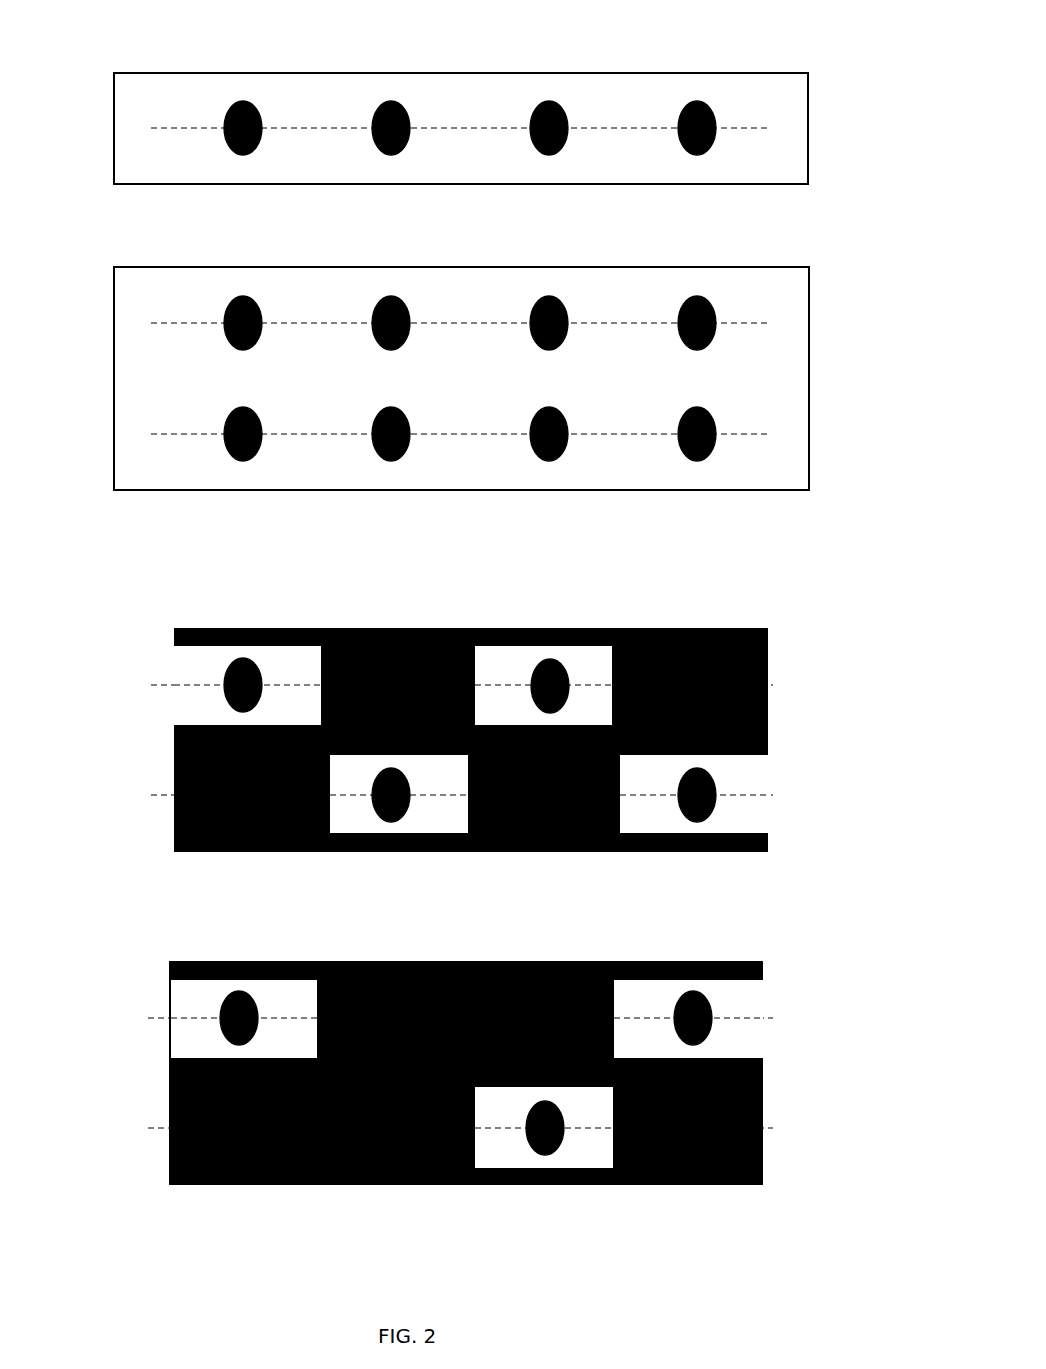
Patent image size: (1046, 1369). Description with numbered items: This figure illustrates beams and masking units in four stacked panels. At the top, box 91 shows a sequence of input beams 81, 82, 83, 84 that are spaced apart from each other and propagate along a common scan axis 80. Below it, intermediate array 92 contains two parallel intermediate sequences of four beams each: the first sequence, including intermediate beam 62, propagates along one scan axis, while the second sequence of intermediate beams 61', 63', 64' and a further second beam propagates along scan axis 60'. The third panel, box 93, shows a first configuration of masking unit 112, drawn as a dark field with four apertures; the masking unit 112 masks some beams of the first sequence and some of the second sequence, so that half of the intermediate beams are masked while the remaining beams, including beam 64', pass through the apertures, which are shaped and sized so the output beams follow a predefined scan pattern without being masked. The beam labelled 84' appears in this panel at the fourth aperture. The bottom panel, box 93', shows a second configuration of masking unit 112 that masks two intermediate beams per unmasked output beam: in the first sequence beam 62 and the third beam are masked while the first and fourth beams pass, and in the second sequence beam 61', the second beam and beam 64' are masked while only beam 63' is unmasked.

The scan axis 80 is at (160, 118).
The input beam 81 is at (243, 95).
The input beam 82 is at (385, 93).
The input beam 83 is at (543, 93).
The input beam 84 is at (664, 87).
The box 91 is at (835, 129).
The scan axis 60' is at (406, 408).
The intermediate beam 62 is at (366, 289).
The intermediate beam 61' is at (267, 476).
The intermediate beam 63' is at (569, 471).
The intermediate beam 64' is at (710, 471).
The light emitter 84' is at (716, 831).
The intermediate array 92 is at (835, 323).
The box 93 is at (862, 636).
The box 93' is at (519, 1048).
The masking unit 112 is at (462, 740).